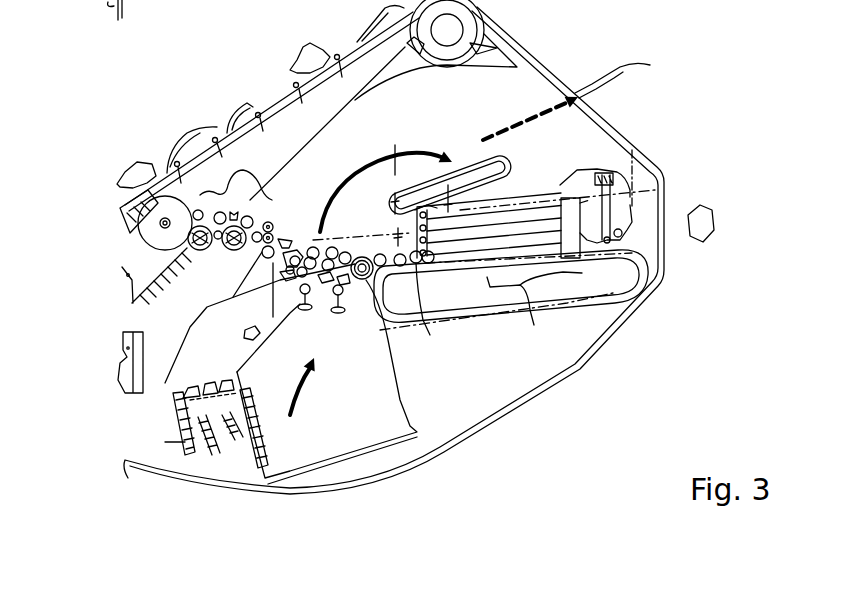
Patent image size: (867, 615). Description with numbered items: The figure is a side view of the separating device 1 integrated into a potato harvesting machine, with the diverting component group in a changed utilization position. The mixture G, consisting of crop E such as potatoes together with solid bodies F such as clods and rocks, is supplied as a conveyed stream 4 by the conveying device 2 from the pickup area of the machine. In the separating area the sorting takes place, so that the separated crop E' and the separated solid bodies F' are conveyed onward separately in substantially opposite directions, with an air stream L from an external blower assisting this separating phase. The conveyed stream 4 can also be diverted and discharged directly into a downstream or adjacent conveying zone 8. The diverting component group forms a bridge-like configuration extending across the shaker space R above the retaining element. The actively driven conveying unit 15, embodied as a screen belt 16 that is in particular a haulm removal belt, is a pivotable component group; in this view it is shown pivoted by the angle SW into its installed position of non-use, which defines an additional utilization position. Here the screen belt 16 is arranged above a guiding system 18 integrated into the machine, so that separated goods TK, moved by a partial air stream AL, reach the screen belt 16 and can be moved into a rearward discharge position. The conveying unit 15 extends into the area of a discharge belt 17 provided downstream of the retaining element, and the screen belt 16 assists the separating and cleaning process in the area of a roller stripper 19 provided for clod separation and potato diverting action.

The separating device 1 is at (236, 464).
The conveying device 2 is at (115, 253).
The conveyed stream 4 is at (70, 250).
The conveying zone 8 is at (534, 312).
The conveying unit 15 is at (528, 203).
The screen belt 16 is at (481, 187).
The discharge belt 17 is at (580, 302).
The guiding system 18 is at (531, 171).
The roller stripper 19 is at (540, 237).
The shaker space R is at (212, 312).
The mixture G is at (245, 172).
The solid bodies F is at (283, 209).
The separated solid bodies F' is at (223, 349).
The crop E is at (356, 215).
The separated crop E' is at (436, 325).
The air stream L is at (307, 408).
The pivot angle SW is at (420, 153).
The partial air stream AL is at (527, 117).
The separated goods TK is at (620, 64).